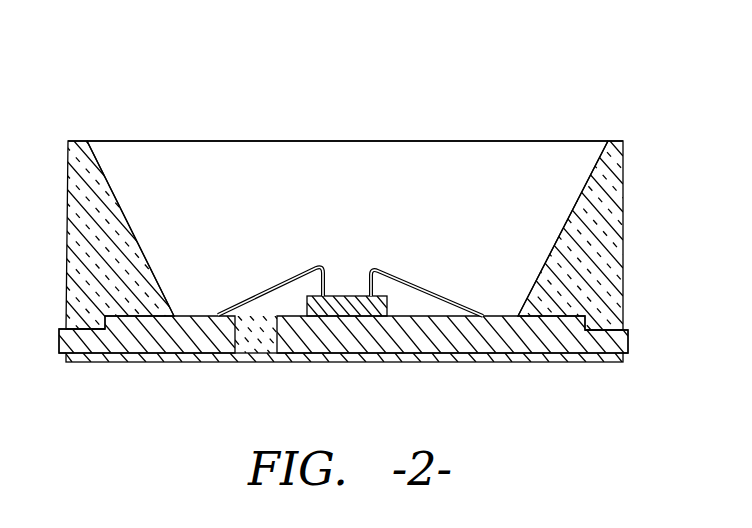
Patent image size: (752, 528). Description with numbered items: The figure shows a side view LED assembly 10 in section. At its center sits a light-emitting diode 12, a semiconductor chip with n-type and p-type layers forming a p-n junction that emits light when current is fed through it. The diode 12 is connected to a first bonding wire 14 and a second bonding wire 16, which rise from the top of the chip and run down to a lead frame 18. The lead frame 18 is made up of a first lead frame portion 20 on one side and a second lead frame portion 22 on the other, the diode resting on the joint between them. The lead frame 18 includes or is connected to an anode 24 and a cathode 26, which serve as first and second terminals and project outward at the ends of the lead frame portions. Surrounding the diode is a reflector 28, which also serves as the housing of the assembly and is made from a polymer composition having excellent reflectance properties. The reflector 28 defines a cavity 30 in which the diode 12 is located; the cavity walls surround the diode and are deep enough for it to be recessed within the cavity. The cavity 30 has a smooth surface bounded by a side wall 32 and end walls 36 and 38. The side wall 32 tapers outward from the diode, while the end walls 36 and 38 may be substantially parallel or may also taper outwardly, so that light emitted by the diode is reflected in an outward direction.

The LED assembly 10 is at (505, 107).
The light-emitting diode 12 is at (330, 293).
The first bonding wire 14 is at (290, 277).
The second bonding wire 16 is at (405, 278).
The lead frame 18 is at (392, 344).
The first lead frame portion 20 is at (190, 354).
The second lead frame portion 22 is at (527, 344).
The anode 24 is at (57, 340).
The cathode 26 is at (627, 343).
The reflector 28 is at (80, 140).
The cavity 30 is at (255, 140).
The side wall 32 is at (308, 162).
The end wall 36 is at (103, 168).
The end wall 38 is at (592, 167).